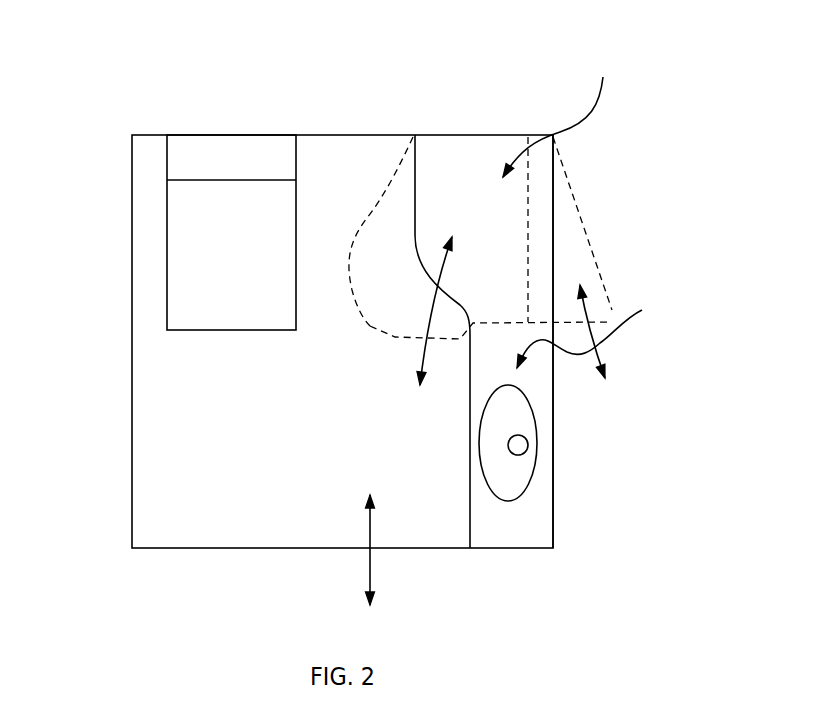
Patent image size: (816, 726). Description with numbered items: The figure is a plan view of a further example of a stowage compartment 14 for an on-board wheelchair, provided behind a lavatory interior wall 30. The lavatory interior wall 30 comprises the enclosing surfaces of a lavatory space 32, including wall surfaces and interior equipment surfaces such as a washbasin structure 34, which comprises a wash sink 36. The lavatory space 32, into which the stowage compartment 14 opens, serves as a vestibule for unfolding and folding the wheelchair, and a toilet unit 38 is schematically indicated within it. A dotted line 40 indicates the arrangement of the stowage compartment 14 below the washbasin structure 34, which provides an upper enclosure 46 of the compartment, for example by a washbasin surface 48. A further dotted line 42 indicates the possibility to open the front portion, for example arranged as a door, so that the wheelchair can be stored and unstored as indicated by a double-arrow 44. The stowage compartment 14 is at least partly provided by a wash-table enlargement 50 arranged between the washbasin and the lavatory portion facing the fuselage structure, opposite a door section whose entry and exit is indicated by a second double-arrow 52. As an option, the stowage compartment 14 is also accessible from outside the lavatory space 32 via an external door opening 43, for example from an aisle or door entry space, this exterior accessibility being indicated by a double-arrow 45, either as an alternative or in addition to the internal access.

The stowage compartment 14 is at (560, 114).
The lavatory interior wall 30 is at (470, 400).
The lavatory space 32 is at (283, 454).
The washbasin structure 34 is at (596, 331).
The wash sink 36 is at (538, 469).
The toilet unit 38 is at (168, 240).
The dotted line 40 is at (530, 198).
The further dotted line 42 is at (367, 218).
The external door opening 43 is at (606, 290).
The double-arrow 44 is at (434, 324).
The double-arrow 45 is at (600, 352).
The upper enclosure 46 is at (543, 272).
The washbasin surface 48 is at (538, 396).
The wash-table enlargement 50 is at (413, 201).
The second double-arrow 52 is at (372, 533).